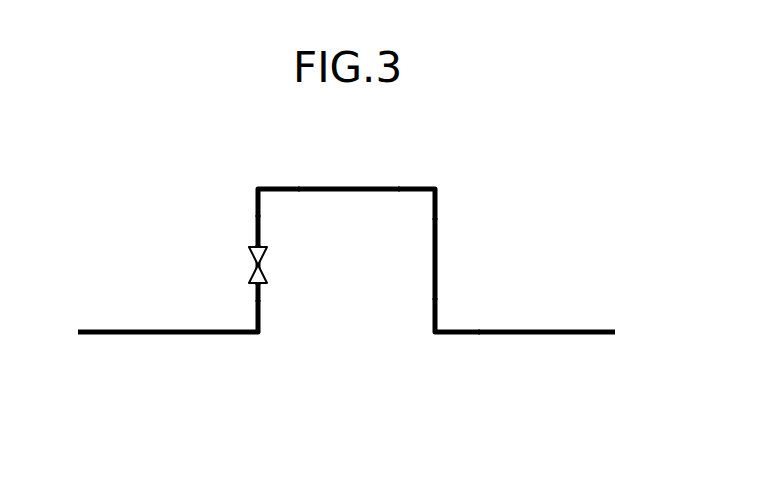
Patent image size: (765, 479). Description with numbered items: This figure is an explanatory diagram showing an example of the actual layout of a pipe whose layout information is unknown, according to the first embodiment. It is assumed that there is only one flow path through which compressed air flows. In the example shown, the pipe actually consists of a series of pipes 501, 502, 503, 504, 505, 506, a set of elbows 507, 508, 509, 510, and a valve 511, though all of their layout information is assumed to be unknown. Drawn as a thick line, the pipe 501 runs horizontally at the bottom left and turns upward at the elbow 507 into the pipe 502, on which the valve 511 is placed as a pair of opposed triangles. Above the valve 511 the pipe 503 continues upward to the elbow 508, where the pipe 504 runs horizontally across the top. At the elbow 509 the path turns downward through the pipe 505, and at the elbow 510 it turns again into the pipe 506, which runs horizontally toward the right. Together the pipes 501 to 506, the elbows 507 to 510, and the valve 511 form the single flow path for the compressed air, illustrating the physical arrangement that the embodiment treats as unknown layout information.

The pipe 501 is at (187, 332).
The pipe 502 is at (260, 322).
The pipe 503 is at (257, 227).
The pipe 504 is at (312, 188).
The pipe 505 is at (437, 258).
The pipe 506 is at (487, 332).
The elbow 507 is at (255, 323).
The elbow 508 is at (257, 190).
The elbow 509 is at (437, 189).
The elbow 510 is at (438, 325).
The valve 511 is at (253, 260).